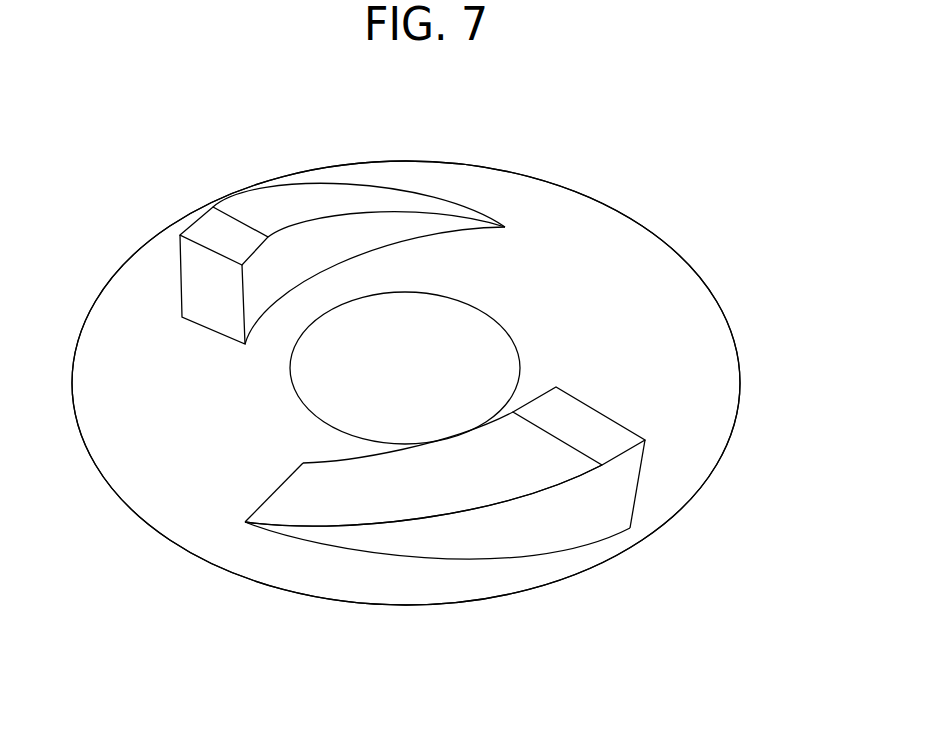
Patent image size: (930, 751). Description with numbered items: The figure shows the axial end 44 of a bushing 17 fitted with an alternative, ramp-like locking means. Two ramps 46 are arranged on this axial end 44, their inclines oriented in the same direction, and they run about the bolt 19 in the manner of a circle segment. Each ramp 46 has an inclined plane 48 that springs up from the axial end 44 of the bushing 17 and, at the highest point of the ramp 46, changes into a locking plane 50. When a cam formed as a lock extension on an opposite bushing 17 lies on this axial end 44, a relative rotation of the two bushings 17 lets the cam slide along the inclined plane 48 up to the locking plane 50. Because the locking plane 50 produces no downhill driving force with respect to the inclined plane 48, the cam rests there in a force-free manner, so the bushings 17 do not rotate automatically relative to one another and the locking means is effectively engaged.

The bushing 17 is at (620, 208).
The axial end 44 is at (642, 313).
The bolt 19 is at (342, 388).
The locking plane 50 is at (600, 430).
The ramp 46 is at (608, 499).
The inclined plane 48 is at (457, 493).